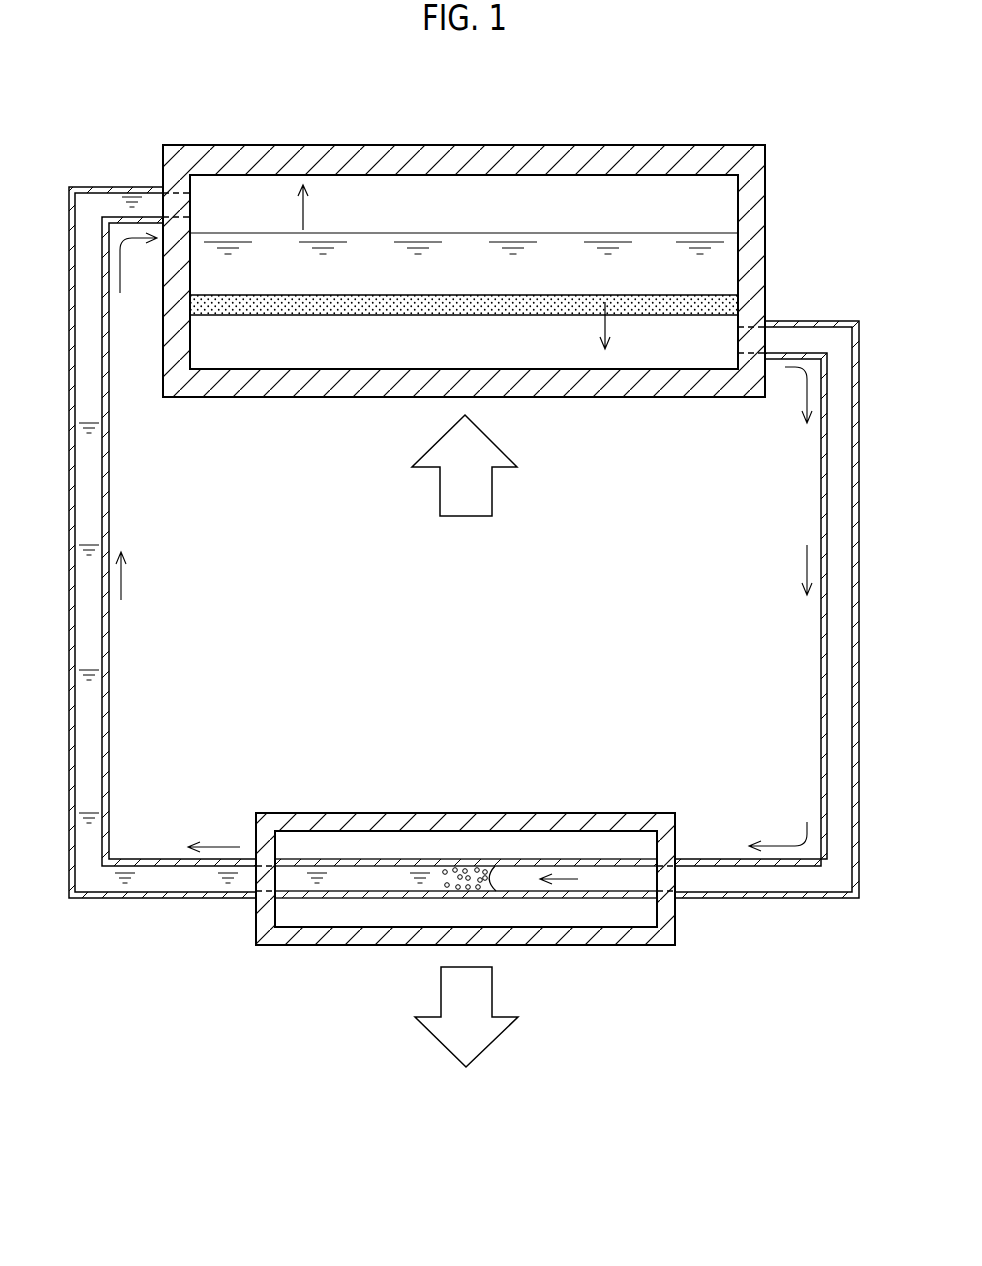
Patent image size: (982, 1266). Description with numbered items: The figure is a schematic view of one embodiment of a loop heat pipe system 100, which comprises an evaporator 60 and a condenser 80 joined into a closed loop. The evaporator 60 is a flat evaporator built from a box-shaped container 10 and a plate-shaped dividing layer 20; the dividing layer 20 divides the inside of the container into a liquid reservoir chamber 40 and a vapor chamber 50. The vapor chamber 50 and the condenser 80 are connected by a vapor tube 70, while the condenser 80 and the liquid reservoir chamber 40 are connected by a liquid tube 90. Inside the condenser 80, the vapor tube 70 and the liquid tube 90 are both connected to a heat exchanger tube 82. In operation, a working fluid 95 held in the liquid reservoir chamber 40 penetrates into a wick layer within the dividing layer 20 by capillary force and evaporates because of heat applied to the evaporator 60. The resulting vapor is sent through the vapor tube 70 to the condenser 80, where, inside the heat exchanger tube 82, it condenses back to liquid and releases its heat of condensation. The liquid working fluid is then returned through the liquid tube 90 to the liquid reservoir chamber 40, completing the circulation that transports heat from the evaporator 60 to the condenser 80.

The loop heat pipe system 100 is at (781, 101).
The container 10 is at (639, 150).
The evaporator 60 is at (507, 257).
The liquid reservoir chamber 40 is at (478, 214).
The vapor chamber 50 is at (478, 353).
The dividing layer 20 is at (719, 305).
The working fluid 95 is at (719, 259).
The condenser 80 is at (675, 813).
The heat exchanger tube 82 is at (352, 878).
The liquid tube 90 is at (97, 878).
The vapor tube 70 is at (826, 876).